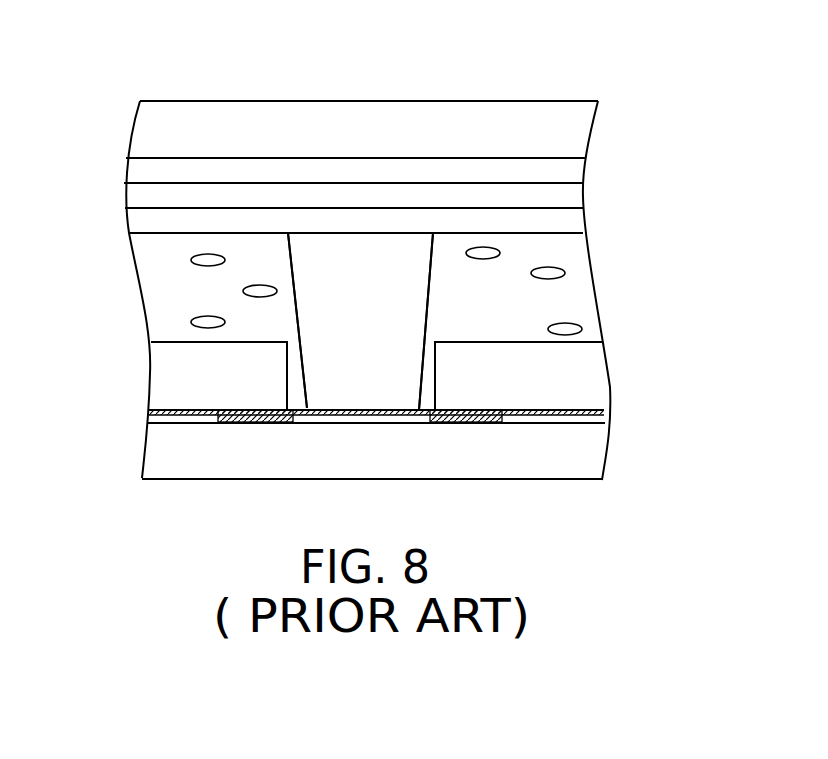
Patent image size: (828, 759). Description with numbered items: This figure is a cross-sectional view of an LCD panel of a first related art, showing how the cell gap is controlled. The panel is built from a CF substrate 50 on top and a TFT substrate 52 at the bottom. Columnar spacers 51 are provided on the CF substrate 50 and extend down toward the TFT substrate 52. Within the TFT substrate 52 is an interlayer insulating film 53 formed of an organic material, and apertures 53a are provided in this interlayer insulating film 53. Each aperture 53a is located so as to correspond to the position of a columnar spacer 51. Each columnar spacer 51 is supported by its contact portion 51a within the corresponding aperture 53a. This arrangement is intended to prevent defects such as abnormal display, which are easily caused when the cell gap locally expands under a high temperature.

The CF substrate 50 is at (116, 103).
The columnar spacer 51 is at (350, 250).
The contact portion 51a is at (298, 408).
The TFT substrate 52 is at (115, 342).
The interlayer insulating film 53 is at (568, 292).
The aperture 53a is at (429, 340).